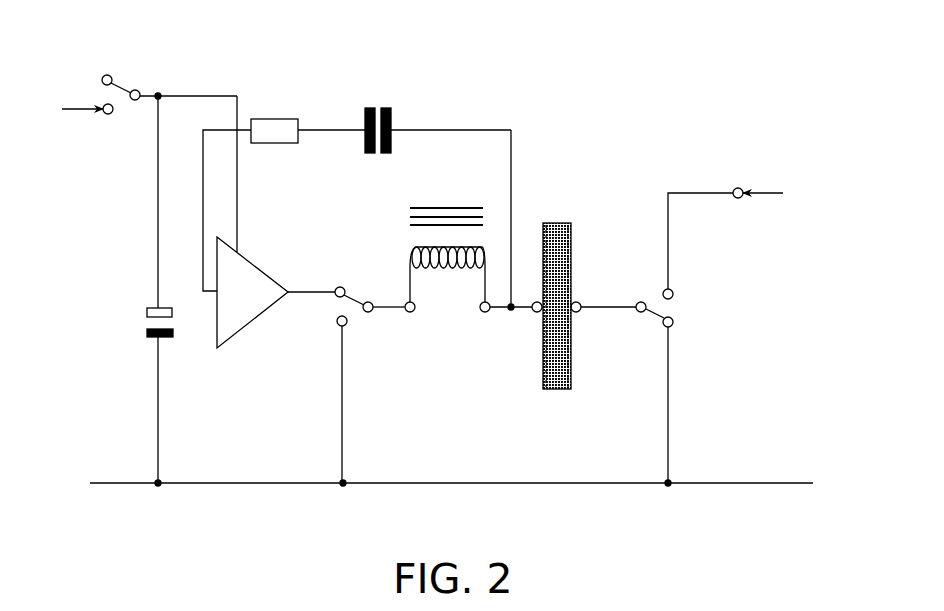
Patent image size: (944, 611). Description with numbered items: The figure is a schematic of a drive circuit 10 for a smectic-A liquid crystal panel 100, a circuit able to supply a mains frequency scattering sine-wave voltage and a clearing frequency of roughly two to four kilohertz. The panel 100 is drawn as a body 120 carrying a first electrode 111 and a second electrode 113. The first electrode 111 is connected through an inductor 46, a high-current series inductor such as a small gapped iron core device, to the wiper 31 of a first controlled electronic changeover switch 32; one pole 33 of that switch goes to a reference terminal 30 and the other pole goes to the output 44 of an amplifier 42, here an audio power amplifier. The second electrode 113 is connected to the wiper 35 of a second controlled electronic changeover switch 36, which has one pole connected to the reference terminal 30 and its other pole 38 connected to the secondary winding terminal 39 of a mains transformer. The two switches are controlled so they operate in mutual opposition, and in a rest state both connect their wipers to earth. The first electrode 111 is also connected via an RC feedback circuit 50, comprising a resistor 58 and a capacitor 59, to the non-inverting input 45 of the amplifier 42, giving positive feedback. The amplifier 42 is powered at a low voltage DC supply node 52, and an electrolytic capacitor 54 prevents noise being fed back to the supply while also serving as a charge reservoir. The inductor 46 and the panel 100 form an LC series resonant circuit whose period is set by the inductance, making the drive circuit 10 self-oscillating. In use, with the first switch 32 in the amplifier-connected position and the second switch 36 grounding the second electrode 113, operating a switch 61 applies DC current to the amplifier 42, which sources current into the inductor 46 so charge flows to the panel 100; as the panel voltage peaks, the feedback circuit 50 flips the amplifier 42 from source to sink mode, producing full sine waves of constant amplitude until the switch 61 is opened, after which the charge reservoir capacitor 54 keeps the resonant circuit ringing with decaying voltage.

The drive circuit 10 is at (757, 507).
The reference terminal 30 is at (388, 485).
The wiper 31 is at (350, 300).
The first controlled electronic changeover switch 32 is at (308, 332).
The pole 33 is at (345, 321).
The wiper 35 is at (670, 315).
The second controlled electronic changeover switch 36 is at (710, 330).
The pole 38 is at (663, 292).
The secondary winding terminal 39 is at (738, 188).
The amplifier 42 is at (233, 302).
The output 44 is at (340, 288).
The non-inverting input 45 is at (207, 298).
The inductor 46 is at (442, 270).
The RC feedback circuit 50 is at (362, 78).
The low voltage DC supply node 52 is at (148, 98).
The electrolytic capacitor 54 is at (147, 331).
The resistor 58 is at (273, 118).
The capacitor 59 is at (392, 121).
The switch 61 is at (122, 86).
The smectic-A liquid crystal panel 100 is at (563, 207).
The first electrode 111 is at (542, 360).
The second electrode 113 is at (573, 361).
The piezoelectric body 120 is at (557, 392).